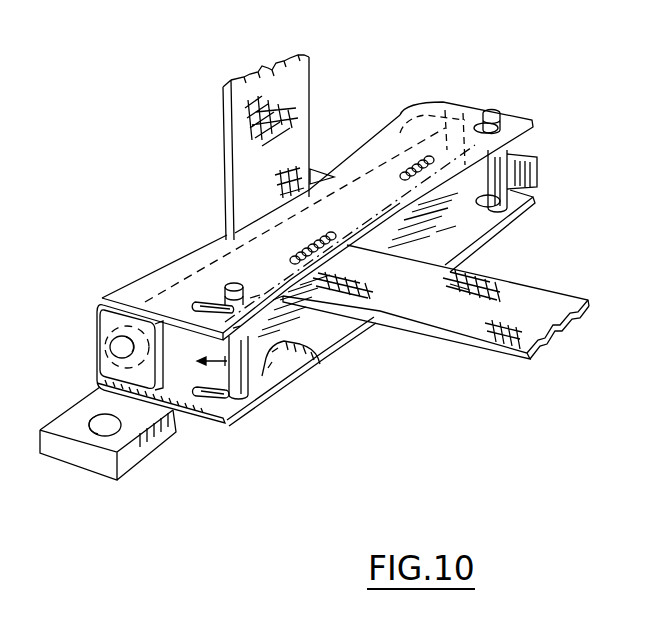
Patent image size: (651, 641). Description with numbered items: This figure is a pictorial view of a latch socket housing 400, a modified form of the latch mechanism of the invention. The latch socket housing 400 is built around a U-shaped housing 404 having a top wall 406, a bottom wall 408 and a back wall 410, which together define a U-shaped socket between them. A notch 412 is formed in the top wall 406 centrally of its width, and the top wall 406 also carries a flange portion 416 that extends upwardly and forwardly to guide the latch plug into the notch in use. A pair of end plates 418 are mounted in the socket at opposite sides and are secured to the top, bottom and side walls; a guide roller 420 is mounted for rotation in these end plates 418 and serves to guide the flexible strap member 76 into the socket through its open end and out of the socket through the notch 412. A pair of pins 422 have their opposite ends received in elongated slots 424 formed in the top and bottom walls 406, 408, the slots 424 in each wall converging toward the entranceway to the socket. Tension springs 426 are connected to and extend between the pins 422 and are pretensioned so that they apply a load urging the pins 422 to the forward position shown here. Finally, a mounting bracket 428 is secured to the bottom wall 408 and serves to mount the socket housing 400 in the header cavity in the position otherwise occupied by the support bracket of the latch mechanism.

The flexible strap member 76 is at (300, 67).
The latch socket housing 400 is at (173, 203).
The U-shaped housing 404 is at (102, 297).
The top wall 406 is at (210, 252).
The bottom wall 408 is at (227, 408).
The back wall 410 is at (95, 331).
The notch 412 is at (327, 173).
The flange portion 416 is at (523, 120).
The end plates 418 is at (112, 365).
The guide roller 420 is at (190, 305).
The pins 422 is at (500, 203).
The elongated slots 424 is at (172, 328).
The tension springs 426 is at (410, 170).
The mounting bracket 428 is at (110, 452).